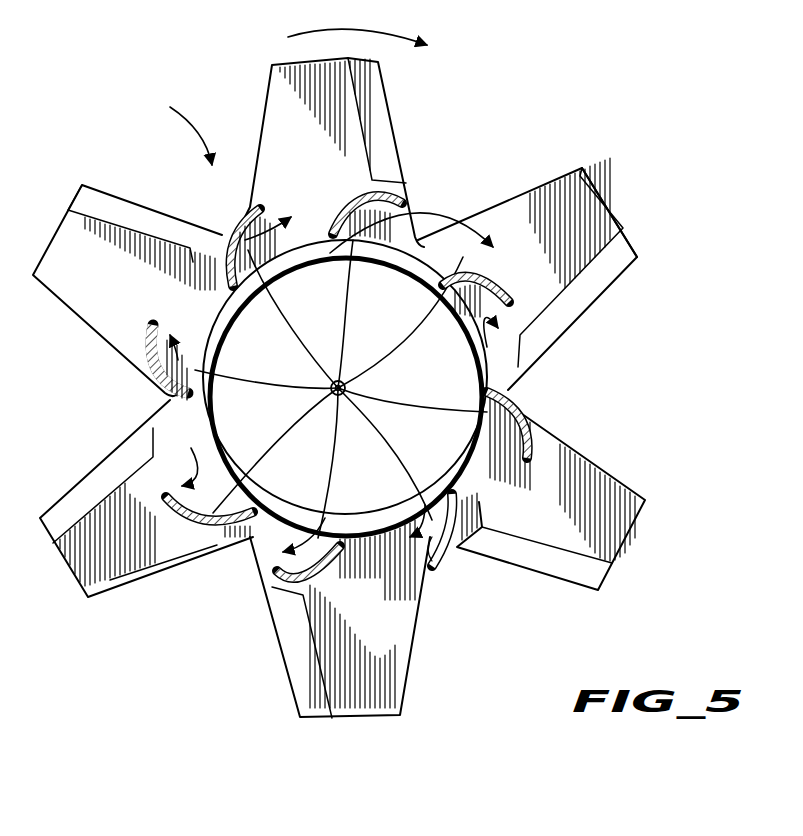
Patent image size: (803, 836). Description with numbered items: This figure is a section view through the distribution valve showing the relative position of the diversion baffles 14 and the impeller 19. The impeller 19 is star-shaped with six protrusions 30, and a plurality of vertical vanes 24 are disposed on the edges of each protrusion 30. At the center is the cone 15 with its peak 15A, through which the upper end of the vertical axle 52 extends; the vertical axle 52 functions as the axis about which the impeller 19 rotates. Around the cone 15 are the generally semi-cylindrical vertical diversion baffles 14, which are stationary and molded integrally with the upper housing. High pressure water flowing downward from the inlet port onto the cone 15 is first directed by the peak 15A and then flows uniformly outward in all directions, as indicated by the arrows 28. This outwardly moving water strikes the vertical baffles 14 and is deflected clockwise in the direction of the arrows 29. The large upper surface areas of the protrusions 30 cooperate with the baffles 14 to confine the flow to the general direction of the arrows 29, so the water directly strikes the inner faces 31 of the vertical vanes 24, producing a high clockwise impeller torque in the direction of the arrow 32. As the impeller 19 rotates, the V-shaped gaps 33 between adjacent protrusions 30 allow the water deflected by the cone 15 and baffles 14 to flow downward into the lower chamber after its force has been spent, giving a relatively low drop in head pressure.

The diversion baffle 14 is at (150, 323).
The cone 15 is at (327, 296).
The peak 15A is at (343, 381).
The impeller 19 is at (617, 202).
The vertical vane 24 is at (108, 197).
The arrow 28 is at (282, 315).
The arrow 29 is at (258, 242).
The star-shaped protrusion 30 is at (282, 110).
The inner face 31 is at (130, 233).
The arrow 32 is at (360, 32).
The V-shaped gap 33 is at (177, 128).
The vertical axle 52 is at (346, 397).